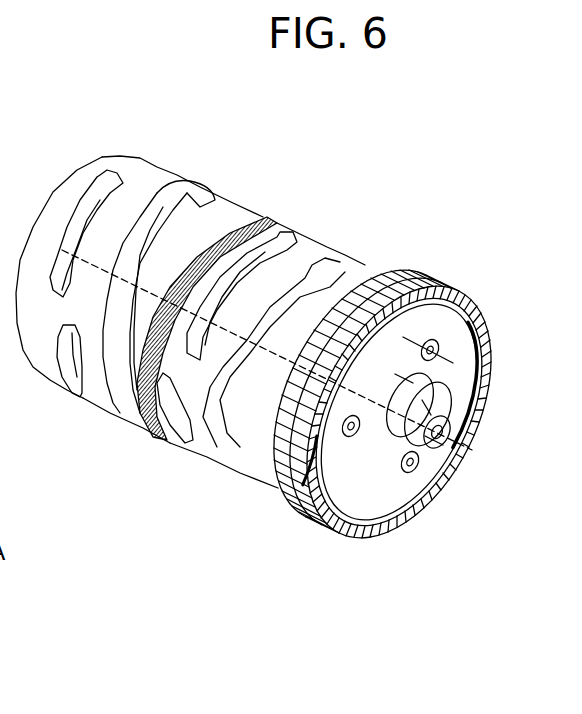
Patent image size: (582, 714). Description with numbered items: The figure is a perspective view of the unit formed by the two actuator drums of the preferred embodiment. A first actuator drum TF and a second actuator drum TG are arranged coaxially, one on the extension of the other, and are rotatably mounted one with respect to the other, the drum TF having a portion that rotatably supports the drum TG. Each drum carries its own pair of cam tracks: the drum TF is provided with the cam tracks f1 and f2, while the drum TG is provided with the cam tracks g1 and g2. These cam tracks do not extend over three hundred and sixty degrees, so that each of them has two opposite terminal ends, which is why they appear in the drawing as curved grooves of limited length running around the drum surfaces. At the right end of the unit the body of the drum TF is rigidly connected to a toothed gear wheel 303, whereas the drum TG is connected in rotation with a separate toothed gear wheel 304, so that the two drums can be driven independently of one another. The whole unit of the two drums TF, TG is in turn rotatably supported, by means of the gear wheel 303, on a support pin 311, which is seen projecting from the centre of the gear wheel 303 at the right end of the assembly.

The cam track f1 is at (100, 210).
The cam track f2 is at (160, 220).
The cam track g1 is at (310, 273).
The cam track g2 is at (277, 240).
The actuator drum TF is at (80, 407).
The actuator drum TG is at (207, 463).
The support pin 311 is at (433, 400).
The toothed gear wheel 304 is at (293, 507).
The toothed gear wheel 303 is at (370, 503).